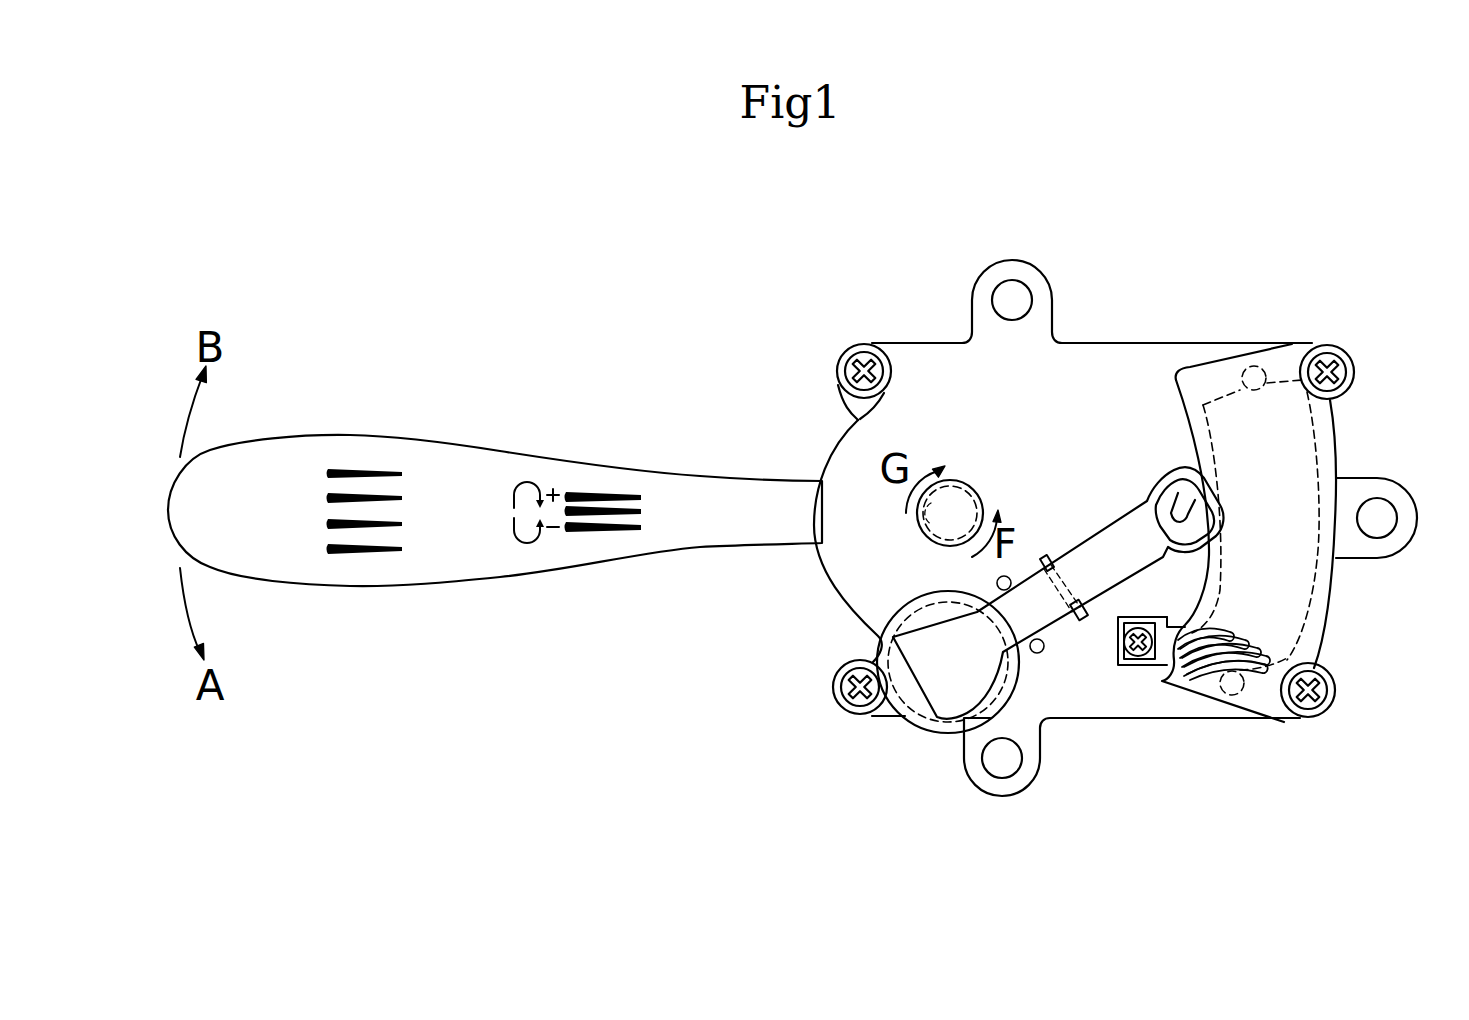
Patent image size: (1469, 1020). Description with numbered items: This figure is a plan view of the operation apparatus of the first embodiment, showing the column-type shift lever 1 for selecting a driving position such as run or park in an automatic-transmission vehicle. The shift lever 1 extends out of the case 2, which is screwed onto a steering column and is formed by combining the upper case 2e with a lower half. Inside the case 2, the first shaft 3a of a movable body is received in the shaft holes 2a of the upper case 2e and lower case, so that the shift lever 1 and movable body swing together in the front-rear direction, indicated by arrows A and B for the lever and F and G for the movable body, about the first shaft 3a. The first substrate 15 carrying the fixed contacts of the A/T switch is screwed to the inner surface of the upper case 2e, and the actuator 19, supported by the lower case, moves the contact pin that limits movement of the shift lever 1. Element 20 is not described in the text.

The shift lever 1 is at (434, 436).
The case 2 is at (1145, 343).
The upper case 2e is at (847, 491).
The shaft hole 2a is at (927, 540).
The first shaft 3a is at (920, 527).
The first substrate 15 is at (1335, 455).
The actuator 19 is at (917, 716).
The band clip 20 is at (1086, 606).